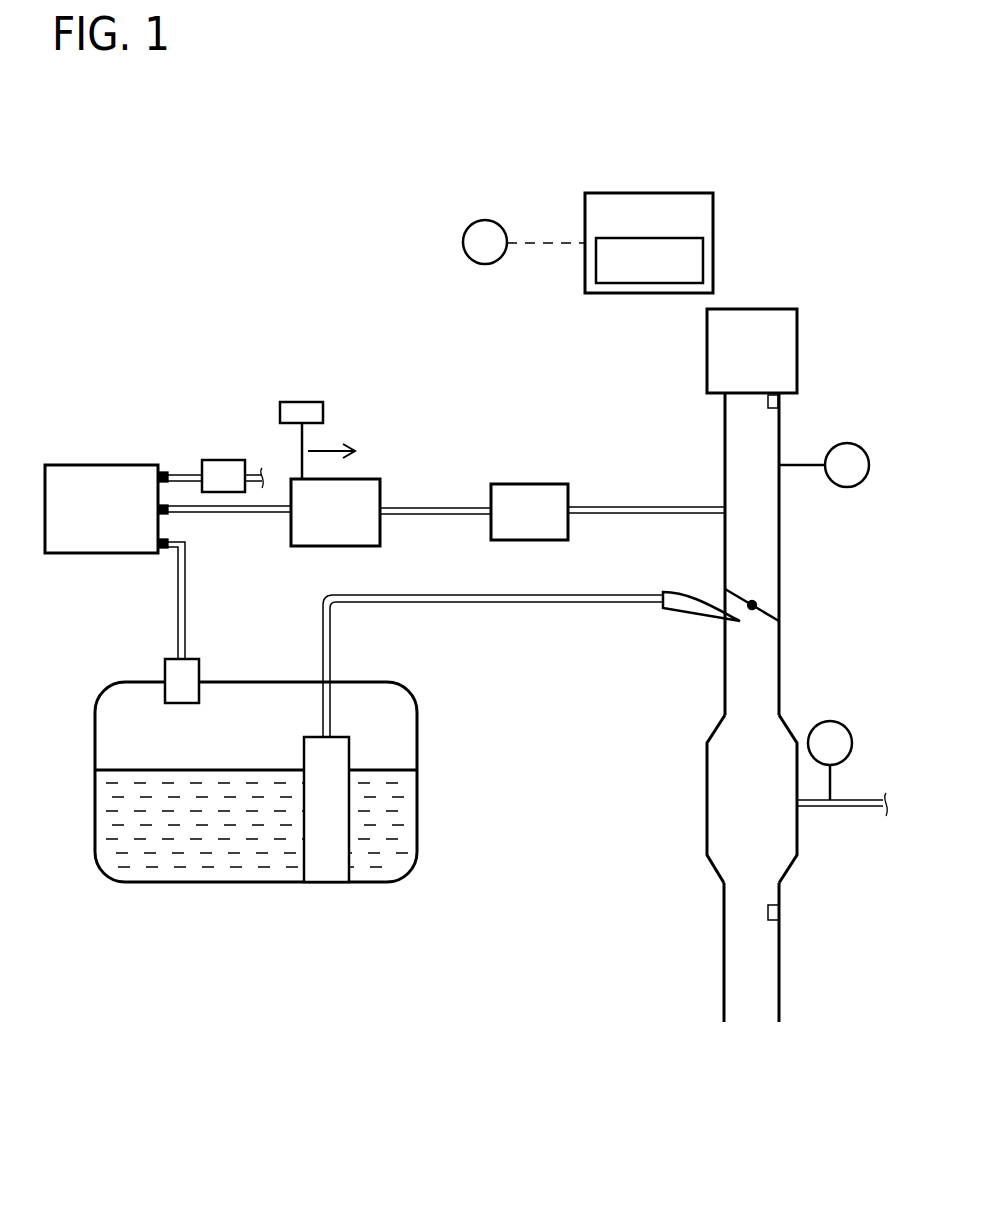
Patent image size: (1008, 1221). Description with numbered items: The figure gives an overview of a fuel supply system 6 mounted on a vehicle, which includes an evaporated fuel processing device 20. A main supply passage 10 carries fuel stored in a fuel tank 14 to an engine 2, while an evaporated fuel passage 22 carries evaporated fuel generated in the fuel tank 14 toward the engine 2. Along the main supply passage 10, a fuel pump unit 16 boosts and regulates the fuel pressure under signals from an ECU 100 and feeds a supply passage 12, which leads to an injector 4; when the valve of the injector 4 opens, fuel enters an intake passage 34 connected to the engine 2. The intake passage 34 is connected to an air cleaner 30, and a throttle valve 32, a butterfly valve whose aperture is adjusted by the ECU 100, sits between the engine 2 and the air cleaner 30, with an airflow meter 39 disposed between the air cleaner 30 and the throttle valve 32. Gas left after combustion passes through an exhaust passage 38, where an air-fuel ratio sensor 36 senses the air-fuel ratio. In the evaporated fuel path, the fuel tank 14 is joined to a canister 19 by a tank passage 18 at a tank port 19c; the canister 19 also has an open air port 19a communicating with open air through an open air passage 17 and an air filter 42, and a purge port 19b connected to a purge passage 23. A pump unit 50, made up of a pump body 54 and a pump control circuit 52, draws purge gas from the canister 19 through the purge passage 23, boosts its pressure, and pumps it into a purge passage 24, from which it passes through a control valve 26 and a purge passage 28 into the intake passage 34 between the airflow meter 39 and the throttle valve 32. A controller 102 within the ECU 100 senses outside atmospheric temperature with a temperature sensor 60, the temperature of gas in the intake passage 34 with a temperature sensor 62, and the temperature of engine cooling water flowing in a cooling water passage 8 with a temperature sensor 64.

The engine 2 is at (797, 835).
The injector 4 is at (680, 607).
The fuel supply system 6 is at (345, 357).
The cooling water passage 8 is at (862, 800).
The main supply passage 10 is at (590, 612).
The supply passage 12 is at (527, 602).
The fuel tank 14 is at (412, 790).
The fuel pump unit 16 is at (334, 850).
The open air passage 17 is at (183, 475).
The tank passage 18 is at (182, 625).
The canister 19 is at (112, 465).
The open air port 19a is at (163, 472).
The purge port 19b is at (168, 515).
The tank port 19c is at (162, 548).
The evaporated fuel processing device 20 is at (402, 475).
The evaporated fuel passage 22 is at (72, 443).
The purge passage 23 is at (262, 512).
The purge passage 24 is at (437, 514).
The control valve 26 is at (530, 484).
The purge passage 28 is at (690, 507).
The air cleaner 30 is at (785, 352).
The throttle valve 32 is at (772, 612).
The intake passage 34 is at (782, 592).
The air-fuel ratio sensor 36 is at (780, 912).
The exhaust passage 38 is at (780, 957).
The airflow meter 39 is at (780, 401).
The air filter 42 is at (222, 460).
The pump unit 50 is at (262, 368).
The pump control circuit 52 is at (290, 402).
The pump body 54 is at (362, 479).
The temperature sensor 60 is at (485, 220).
The temperature sensor 62 is at (847, 488).
The temperature sensor 64 is at (832, 720).
The ECU 100 is at (715, 213).
The controller 102 is at (703, 260).